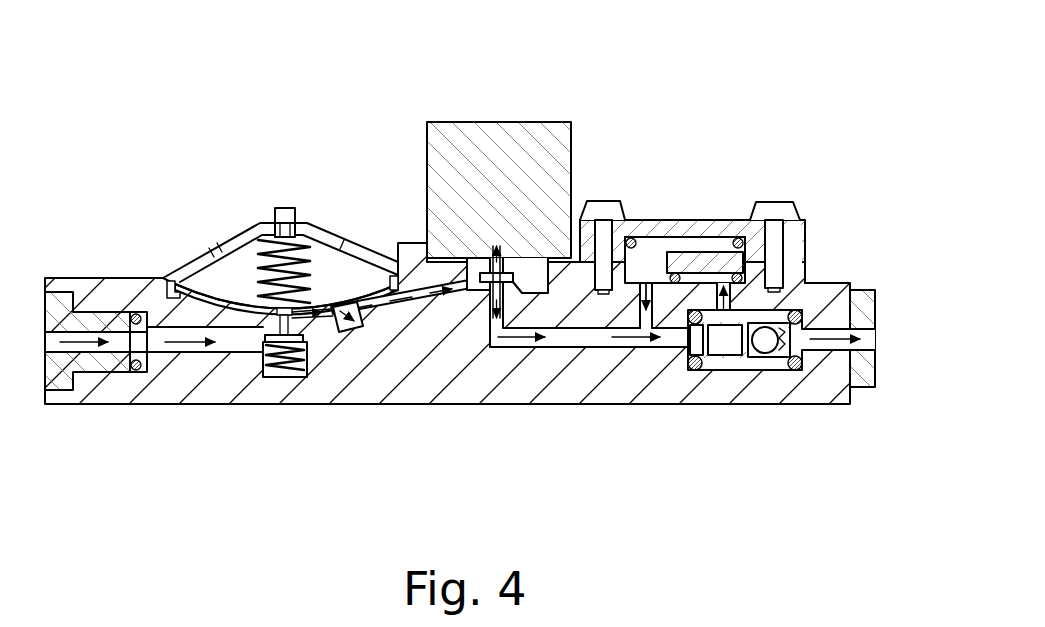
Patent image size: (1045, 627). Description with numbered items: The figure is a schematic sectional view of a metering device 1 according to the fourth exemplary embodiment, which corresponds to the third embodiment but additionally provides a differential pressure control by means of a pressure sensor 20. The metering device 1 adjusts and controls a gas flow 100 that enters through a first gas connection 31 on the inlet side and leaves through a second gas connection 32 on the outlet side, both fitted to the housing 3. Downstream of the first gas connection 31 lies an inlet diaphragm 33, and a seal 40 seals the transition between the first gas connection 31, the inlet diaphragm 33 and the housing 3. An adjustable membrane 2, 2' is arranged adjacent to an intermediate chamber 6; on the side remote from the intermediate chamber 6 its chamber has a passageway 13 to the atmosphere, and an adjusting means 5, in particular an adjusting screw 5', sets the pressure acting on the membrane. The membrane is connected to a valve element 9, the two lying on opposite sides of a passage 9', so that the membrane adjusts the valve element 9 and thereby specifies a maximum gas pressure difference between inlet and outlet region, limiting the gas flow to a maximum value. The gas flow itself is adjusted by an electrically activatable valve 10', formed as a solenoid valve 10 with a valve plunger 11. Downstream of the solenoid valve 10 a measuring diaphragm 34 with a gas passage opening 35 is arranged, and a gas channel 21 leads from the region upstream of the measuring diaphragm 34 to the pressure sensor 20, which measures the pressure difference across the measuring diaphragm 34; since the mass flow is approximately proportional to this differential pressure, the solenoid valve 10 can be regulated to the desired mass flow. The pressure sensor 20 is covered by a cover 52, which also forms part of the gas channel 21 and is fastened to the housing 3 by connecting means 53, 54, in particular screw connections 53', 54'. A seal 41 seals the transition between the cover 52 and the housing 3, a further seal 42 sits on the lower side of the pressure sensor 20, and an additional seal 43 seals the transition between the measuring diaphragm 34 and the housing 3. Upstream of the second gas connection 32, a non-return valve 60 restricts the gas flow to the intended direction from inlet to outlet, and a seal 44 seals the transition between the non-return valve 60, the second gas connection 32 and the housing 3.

The metering device 1 is at (105, 103).
The adjustable membrane 2 is at (218, 193).
The housing cap wall 2' is at (280, 252).
The housing 3 is at (205, 400).
The adjusting means 5 is at (279, 204).
The adjusting screw 5' is at (285, 222).
The intermediate chamber 6 is at (257, 334).
The valve element 9 is at (294, 427).
The passage 9' is at (332, 218).
The solenoid valve 10 is at (499, 152).
The electrically activatable valve 10' is at (499, 190).
The valve plunger 11 is at (486, 272).
The passageway 13 is at (180, 283).
The pressure sensor 20 is at (710, 246).
The gas channel 21 is at (638, 245).
The first gas connection 31 is at (62, 300).
The second gas connection 32 is at (858, 298).
The inlet diaphragm 33 is at (138, 372).
The measuring diaphragm 34 is at (713, 345).
The gas passage opening 35 is at (768, 367).
The seal 40 is at (155, 365).
The seal 41 is at (650, 330).
The further seal 42 is at (685, 320).
The additional seal 43 is at (702, 364).
The seal 44 is at (798, 357).
The cover 52 is at (802, 218).
The connecting means 53 is at (600, 170).
The screw connection 53' is at (602, 247).
The connecting means 54 is at (768, 169).
The screw connection 54' is at (775, 247).
The non-return valve 60 is at (776, 411).
The gas flow 100 is at (547, 340).